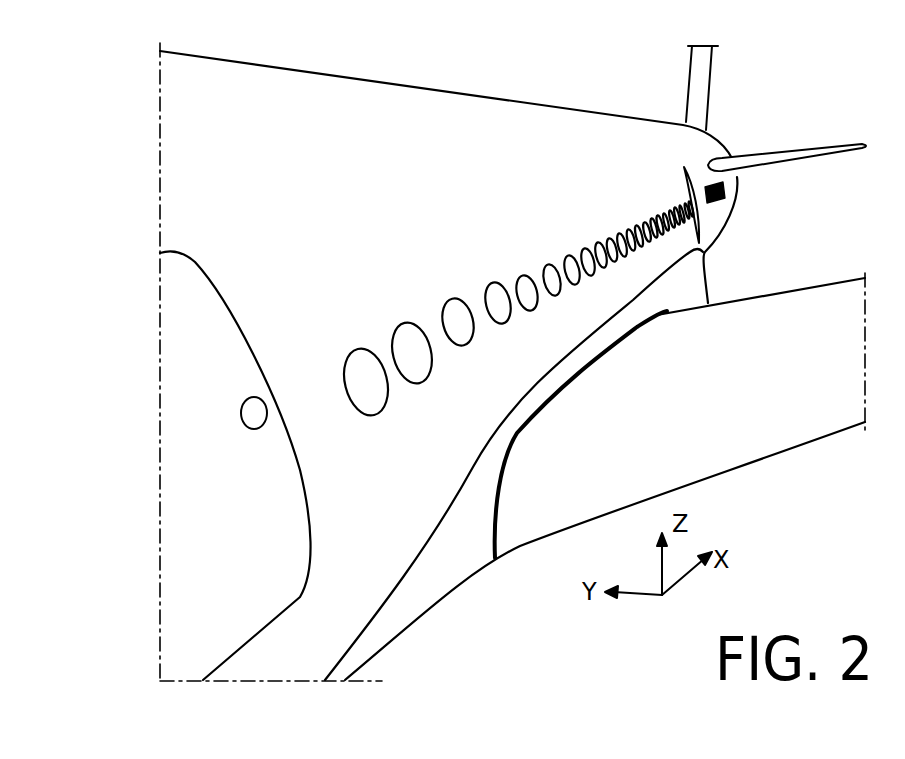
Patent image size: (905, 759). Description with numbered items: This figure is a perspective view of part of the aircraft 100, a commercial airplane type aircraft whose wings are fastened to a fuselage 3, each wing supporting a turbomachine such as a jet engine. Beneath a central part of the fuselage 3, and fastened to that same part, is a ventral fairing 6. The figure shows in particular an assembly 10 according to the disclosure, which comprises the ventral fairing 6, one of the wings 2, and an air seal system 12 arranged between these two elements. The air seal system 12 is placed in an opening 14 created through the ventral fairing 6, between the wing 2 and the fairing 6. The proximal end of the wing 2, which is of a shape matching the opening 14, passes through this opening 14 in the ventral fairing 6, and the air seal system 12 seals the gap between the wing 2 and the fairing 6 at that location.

The aircraft 100 is at (137, 99).
The wing 2 is at (753, 440).
The fuselage 3 is at (365, 560).
The ventral fairing 6 is at (453, 562).
The assembly 10 is at (522, 562).
The air seal system 12 is at (657, 314).
The opening 14 is at (620, 340).